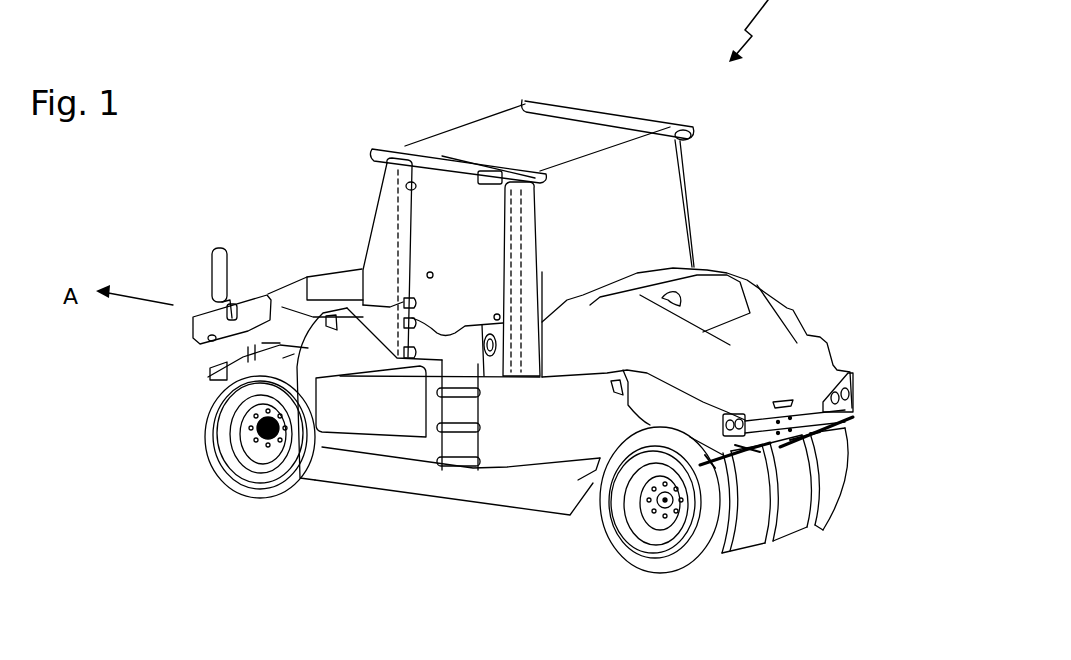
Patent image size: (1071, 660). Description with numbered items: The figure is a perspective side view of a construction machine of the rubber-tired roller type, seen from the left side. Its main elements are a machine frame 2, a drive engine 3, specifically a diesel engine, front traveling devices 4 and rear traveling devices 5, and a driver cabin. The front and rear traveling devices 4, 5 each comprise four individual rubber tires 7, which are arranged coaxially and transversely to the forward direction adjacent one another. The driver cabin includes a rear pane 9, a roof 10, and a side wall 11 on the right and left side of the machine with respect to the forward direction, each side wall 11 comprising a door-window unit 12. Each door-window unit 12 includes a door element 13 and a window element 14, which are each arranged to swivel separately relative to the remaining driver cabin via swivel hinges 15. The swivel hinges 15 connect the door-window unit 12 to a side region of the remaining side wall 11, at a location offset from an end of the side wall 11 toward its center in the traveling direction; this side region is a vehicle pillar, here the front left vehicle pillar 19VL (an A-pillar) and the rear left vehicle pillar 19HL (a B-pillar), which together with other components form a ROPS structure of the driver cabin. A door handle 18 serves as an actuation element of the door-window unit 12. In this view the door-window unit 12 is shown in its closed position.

The machine frame 2 is at (525, 497).
The drive engine 3 is at (706, 293).
The front traveling devices 4 is at (262, 445).
The rear traveling devices 5 is at (648, 549).
The rubber tires 7 is at (378, 202).
The rear pane 9 is at (657, 163).
The roof 10 is at (498, 140).
The side wall 11 is at (525, 257).
The door-window unit 12 is at (463, 321).
The door element 13 is at (403, 310).
The window element 14 is at (440, 222).
The swivel hinges 15 is at (412, 190).
The door handle 18 is at (492, 352).
The front left vehicle pillar 19VL is at (403, 236).
The rear left vehicle pillar 19HL is at (520, 187).